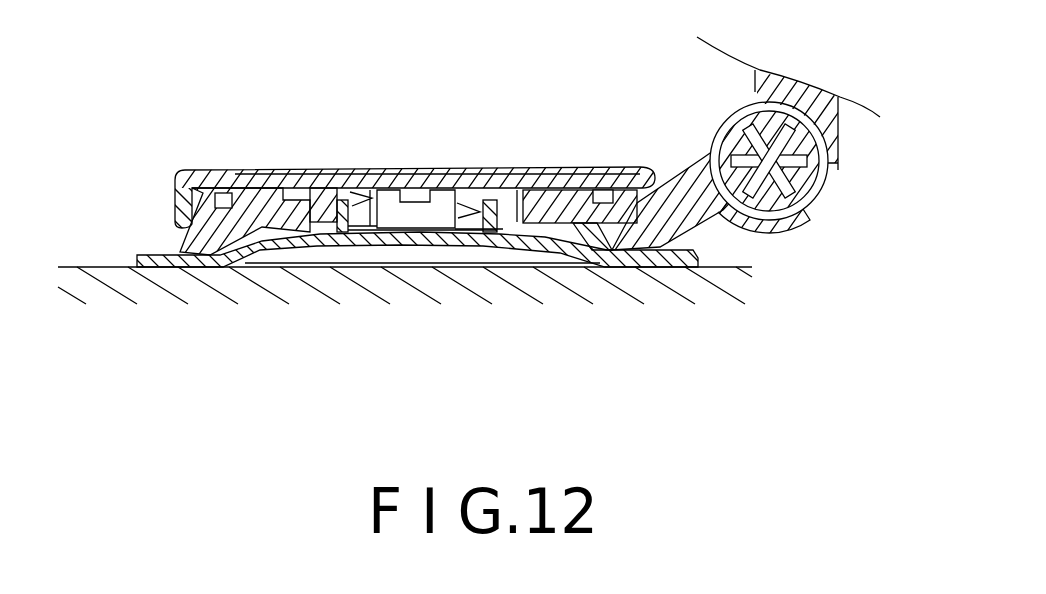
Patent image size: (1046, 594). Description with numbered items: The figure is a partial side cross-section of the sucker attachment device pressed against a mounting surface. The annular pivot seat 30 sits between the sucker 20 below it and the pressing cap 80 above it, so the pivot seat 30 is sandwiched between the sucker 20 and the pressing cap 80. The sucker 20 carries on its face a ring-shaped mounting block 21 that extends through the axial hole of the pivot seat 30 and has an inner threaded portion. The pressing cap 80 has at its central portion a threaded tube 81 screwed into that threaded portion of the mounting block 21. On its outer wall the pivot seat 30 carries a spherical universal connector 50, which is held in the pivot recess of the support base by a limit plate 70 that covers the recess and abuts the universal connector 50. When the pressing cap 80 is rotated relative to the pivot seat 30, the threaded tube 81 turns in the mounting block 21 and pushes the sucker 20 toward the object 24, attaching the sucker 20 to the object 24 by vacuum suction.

The sucker 20 is at (416, 238).
The mounting block 21 is at (483, 228).
The object 24 is at (233, 290).
The pivot seat 30 is at (200, 207).
The universal connector 50 is at (733, 130).
The limit plate 70 is at (817, 177).
The pressing cap 80 is at (430, 178).
The threaded tube 81 is at (355, 190).